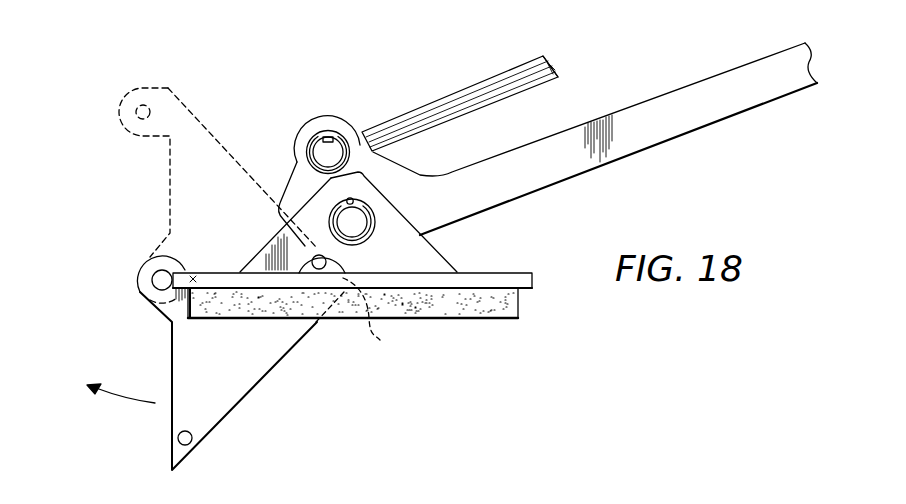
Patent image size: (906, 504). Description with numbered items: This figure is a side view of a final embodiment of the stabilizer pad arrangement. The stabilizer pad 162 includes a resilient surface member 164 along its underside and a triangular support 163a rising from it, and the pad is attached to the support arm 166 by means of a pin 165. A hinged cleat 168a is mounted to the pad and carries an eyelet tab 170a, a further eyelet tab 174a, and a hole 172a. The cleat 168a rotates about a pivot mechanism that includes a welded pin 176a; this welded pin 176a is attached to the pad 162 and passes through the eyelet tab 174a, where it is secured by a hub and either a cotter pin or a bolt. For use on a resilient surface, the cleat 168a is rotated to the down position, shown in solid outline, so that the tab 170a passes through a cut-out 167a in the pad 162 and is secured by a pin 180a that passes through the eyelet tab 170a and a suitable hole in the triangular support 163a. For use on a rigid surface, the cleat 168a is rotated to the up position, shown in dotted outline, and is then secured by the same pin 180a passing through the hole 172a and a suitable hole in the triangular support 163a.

The stabilizer pad 162 is at (533, 282).
The resilient surface member 164 is at (500, 308).
The triangular support 163a is at (450, 262).
The pin 165 is at (352, 222).
The support arm 166 is at (693, 128).
The cut-out 167a is at (368, 318).
The hinged cleat 168a is at (226, 398).
The eyelet tab 170a is at (118, 108).
The hole 172a is at (192, 441).
The eyelet tab 174a is at (155, 292).
The welded pin 176a is at (152, 277).
The pin 180a is at (318, 269).